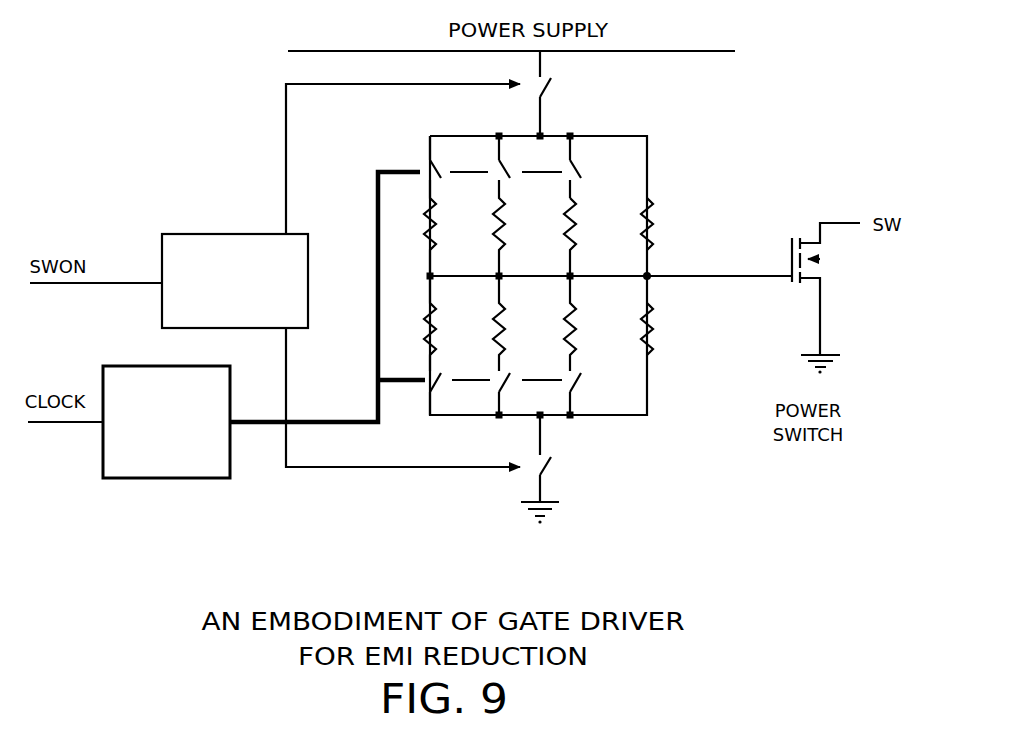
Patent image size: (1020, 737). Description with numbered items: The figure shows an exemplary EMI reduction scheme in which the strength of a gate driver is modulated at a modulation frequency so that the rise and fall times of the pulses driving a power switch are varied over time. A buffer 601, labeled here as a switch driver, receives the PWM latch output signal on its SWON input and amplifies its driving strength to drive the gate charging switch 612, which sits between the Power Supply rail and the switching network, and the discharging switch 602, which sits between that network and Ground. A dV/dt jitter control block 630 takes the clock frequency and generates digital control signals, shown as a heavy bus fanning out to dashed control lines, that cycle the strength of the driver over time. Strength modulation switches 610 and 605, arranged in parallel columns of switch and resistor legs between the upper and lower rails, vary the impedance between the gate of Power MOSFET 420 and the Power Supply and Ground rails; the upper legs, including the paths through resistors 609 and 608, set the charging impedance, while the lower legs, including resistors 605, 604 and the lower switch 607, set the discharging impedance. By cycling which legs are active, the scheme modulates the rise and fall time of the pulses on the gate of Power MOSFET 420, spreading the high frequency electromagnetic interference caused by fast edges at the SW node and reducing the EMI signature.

The buffer 601 is at (235, 281).
The dV/dt jitter control block 630 is at (166, 422).
The gate charging switch 612 is at (551, 87).
The strength modulation switch 610 is at (579, 171).
The upper resistor 609 is at (577, 226).
The upper fixed resistor 608 is at (654, 226).
The strength modulation switch 605 is at (577, 334).
The lower fixed resistor 604 is at (654, 336).
The lower switch 607 is at (579, 383).
The discharging switch 602 is at (550, 465).
The Power MOSFET 420 is at (822, 259).